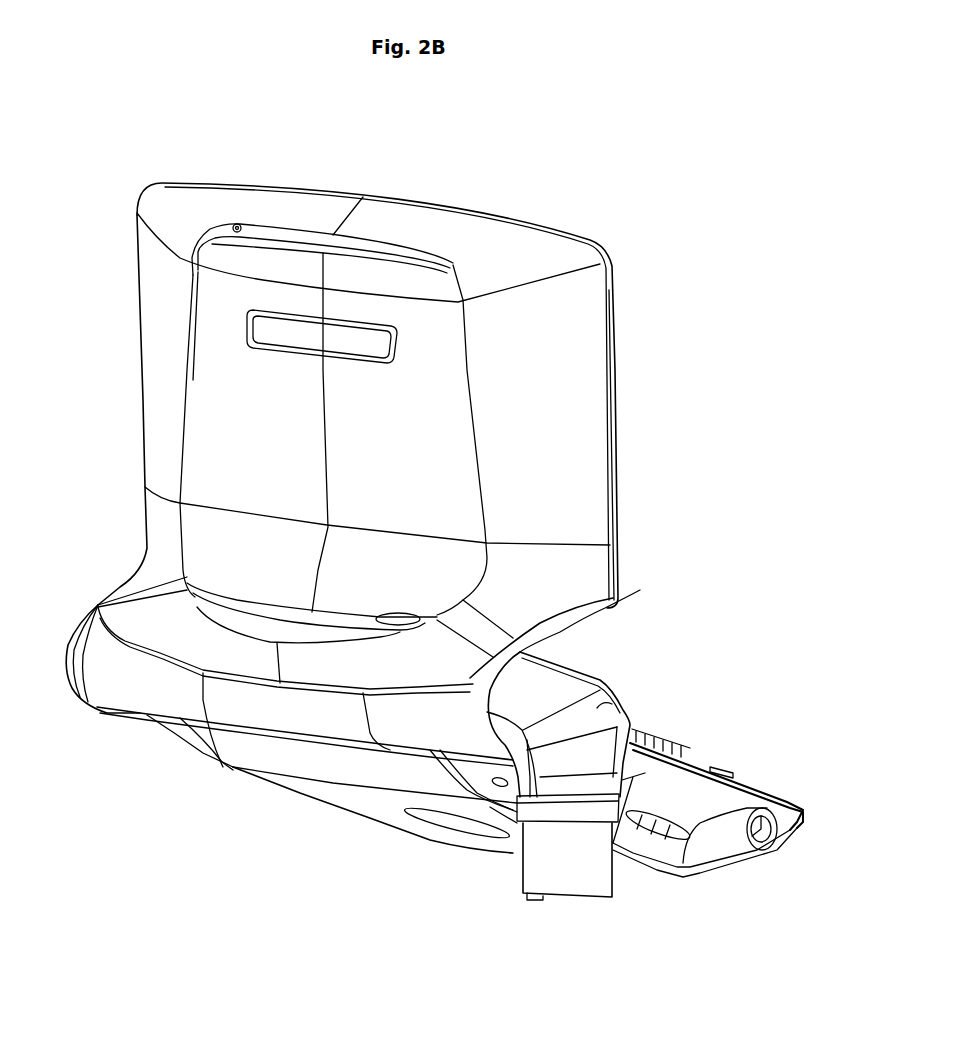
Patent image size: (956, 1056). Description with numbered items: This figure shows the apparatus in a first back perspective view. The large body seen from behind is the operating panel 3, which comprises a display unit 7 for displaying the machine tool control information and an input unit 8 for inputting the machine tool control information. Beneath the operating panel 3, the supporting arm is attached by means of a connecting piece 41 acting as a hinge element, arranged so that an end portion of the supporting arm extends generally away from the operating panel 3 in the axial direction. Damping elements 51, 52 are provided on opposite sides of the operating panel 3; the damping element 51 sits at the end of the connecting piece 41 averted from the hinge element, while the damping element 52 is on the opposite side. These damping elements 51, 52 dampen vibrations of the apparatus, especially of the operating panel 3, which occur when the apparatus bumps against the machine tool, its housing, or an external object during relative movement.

The operating panel 3 is at (658, 486).
The display unit 7 is at (507, 257).
The input unit 8 is at (680, 800).
The connecting piece 41 is at (640, 590).
The damping element 51 is at (617, 710).
The damping element 52 is at (78, 624).